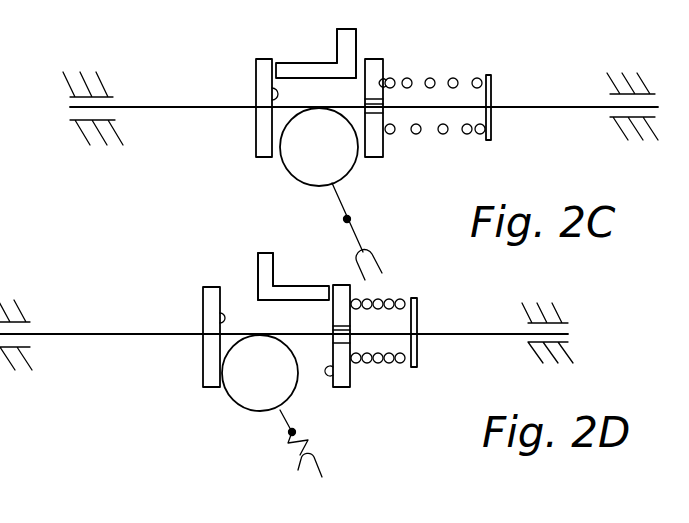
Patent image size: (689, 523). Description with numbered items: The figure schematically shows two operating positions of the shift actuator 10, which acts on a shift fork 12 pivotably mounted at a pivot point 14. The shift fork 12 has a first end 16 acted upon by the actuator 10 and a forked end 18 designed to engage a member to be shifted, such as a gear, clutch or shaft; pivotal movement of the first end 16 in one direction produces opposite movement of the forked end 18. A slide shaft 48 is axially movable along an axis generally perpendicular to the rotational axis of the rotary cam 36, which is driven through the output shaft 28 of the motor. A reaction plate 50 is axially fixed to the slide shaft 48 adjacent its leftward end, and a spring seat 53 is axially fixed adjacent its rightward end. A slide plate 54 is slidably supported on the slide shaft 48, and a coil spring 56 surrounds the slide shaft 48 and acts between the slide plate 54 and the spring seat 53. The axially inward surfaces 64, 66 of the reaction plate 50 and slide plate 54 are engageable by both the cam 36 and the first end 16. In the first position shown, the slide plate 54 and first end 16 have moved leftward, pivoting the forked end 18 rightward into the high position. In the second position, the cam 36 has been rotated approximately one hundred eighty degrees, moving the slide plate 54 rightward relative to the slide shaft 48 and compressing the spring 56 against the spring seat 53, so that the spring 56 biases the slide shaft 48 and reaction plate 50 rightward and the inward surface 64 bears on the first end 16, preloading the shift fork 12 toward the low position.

In FIG. 2C, the shift actuator 10 is at (450, 51).
In FIG. 2D, the shift actuator 10 is at (243, 255).
In FIG. 2C, the shift fork 12 is at (342, 200).
In FIG. 2D, the shift fork 12 is at (297, 421).
In FIG. 2C, the pivot point 14 is at (351, 219).
In FIG. 2D, the pivot point 14 is at (298, 432).
In FIG. 2C, the first end 16 is at (311, 172).
In FIG. 2D, the first end 16 is at (257, 410).
In FIG. 2C, the forked end 18 is at (378, 262).
In FIG. 2D, the forked end 18 is at (325, 460).
In FIG. 2C, the output shaft 28 is at (343, 40).
In FIG. 2D, the output shaft 28 is at (266, 266).
In FIG. 2C, the rotary cam 36 is at (296, 66).
In FIG. 2D, the rotary cam 36 is at (305, 293).
In FIG. 2C, the slide shaft 48 is at (157, 107).
In FIG. 2D, the slide shaft 48 is at (60, 334).
In FIG. 2C, the reaction plate 50 is at (262, 70).
In FIG. 2D, the reaction plate 50 is at (213, 298).
In FIG. 2C, the spring seat 53 is at (492, 93).
In FIG. 2D, the spring seat 53 is at (420, 345).
In FIG. 2C, the slide plate 54 is at (372, 67).
In FIG. 2D, the slide plate 54 is at (344, 297).
In FIG. 2C, the coil spring 56 is at (444, 134).
In FIG. 2D, the coil spring 56 is at (378, 331).
In FIG. 2C, the axially inward surface 64 is at (271, 89).
In FIG. 2D, the axially inward surface 64 is at (219, 313).
In FIG. 2C, the axially inward surface 66 is at (389, 80).
In FIG. 2D, the axially inward surface 66 is at (340, 371).